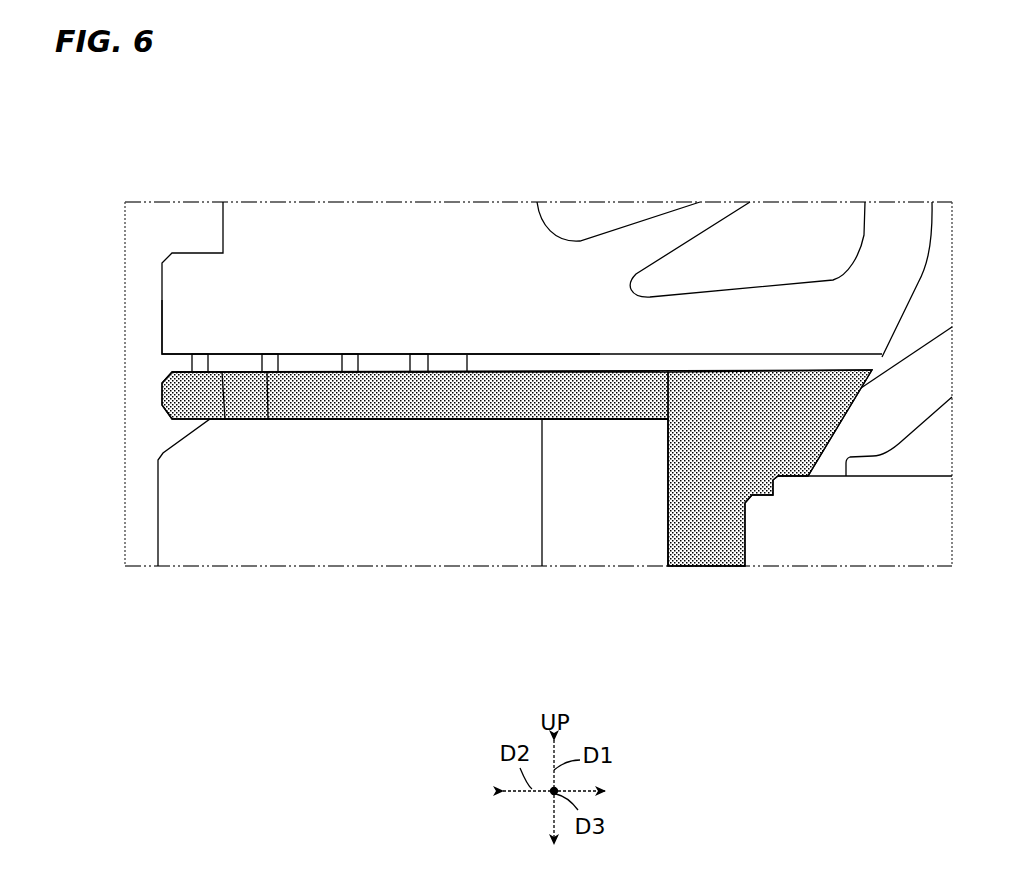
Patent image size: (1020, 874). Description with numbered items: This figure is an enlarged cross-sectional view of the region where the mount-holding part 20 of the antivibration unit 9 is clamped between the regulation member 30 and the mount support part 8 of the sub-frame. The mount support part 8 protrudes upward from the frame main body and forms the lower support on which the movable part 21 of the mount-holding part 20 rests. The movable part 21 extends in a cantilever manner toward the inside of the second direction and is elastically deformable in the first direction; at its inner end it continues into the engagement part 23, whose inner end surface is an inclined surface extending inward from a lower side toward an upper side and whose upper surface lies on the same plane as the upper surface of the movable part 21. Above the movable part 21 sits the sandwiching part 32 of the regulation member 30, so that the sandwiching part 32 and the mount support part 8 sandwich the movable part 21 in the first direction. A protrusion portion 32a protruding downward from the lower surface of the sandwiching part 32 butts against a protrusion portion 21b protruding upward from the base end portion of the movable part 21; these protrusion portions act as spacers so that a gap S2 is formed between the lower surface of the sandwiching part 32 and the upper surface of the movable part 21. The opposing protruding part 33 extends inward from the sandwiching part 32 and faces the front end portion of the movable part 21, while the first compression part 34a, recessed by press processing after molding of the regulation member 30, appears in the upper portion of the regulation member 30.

The regulation member 30 is at (222, 221).
The sandwiching part 32 is at (267, 340).
The protrusion portion 32a is at (193, 358).
The opposing protruding part 33 is at (898, 218).
The first compression part 34a is at (590, 218).
The gap S2 is at (466, 358).
The mount-holding part 20 is at (464, 510).
The movable part 21 is at (518, 398).
The protrusion portion 21b is at (192, 367).
The engagement part 23 is at (810, 407).
The mount support part 8 is at (253, 535).
The antivibration unit 9 is at (657, 524).